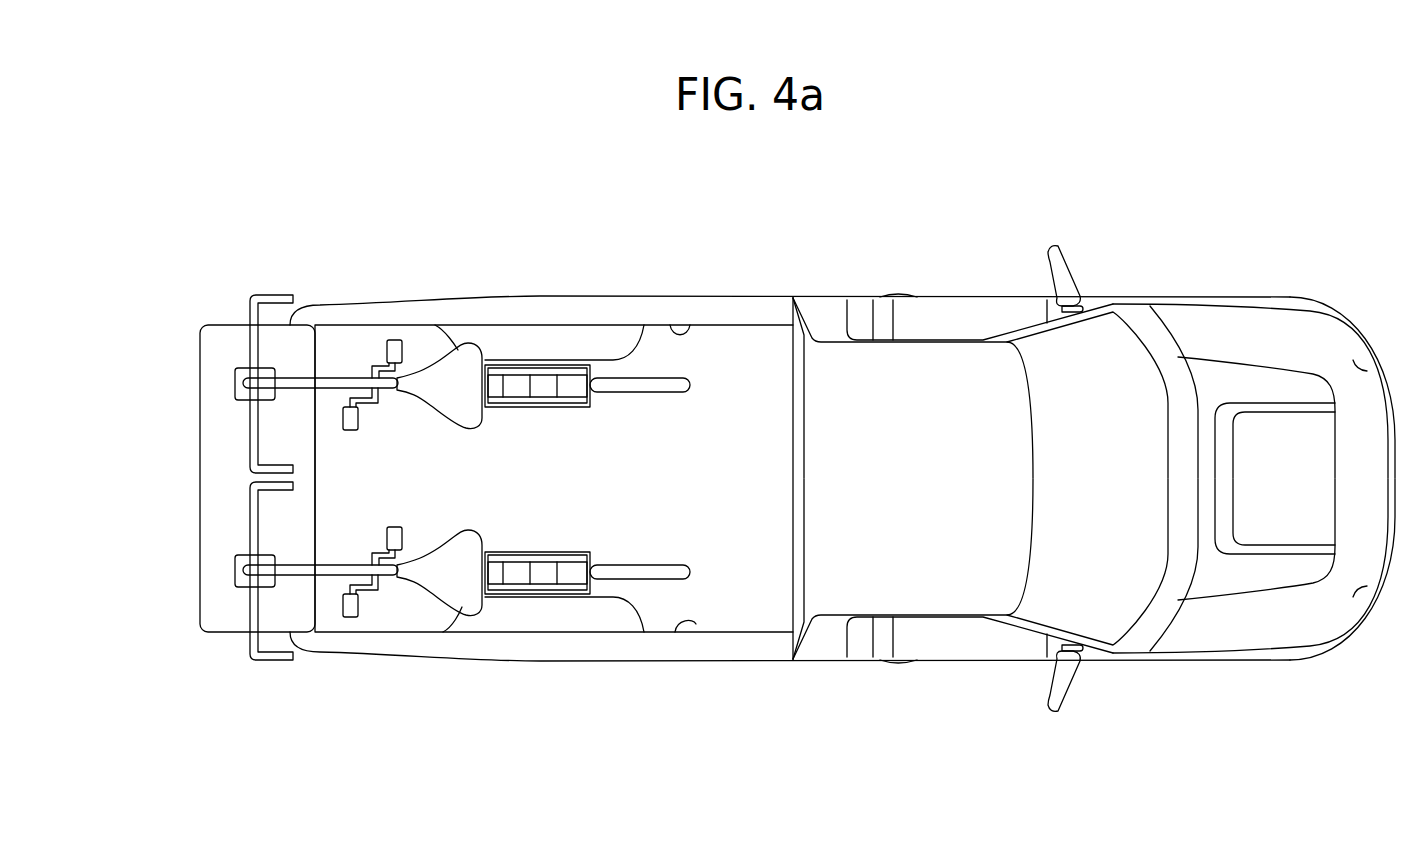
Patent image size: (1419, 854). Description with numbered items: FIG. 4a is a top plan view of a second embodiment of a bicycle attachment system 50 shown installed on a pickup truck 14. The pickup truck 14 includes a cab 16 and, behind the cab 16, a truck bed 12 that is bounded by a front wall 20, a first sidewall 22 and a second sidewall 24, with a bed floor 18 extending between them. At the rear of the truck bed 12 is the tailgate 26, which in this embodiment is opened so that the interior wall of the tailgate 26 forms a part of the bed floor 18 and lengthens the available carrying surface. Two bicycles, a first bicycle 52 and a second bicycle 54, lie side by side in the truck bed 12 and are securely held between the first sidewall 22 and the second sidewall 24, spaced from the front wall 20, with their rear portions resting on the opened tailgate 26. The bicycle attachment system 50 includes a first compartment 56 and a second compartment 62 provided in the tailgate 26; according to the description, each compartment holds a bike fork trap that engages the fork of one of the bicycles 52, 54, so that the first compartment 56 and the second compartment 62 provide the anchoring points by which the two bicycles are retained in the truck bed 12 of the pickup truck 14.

The truck bed 12 is at (739, 366).
The pickup truck 14 is at (1158, 297).
The cab 16 is at (876, 660).
The bed floor 18 is at (561, 492).
The front wall 20 is at (793, 537).
The first sidewall 22 is at (689, 326).
The second sidewall 24 is at (696, 624).
The tailgate 26 is at (218, 510).
The bicycle attachment system 50 is at (409, 481).
The first bicycle 52 is at (432, 372).
The second bicycle 54 is at (466, 592).
The first compartment 56 is at (234, 379).
The second compartment 62 is at (234, 577).